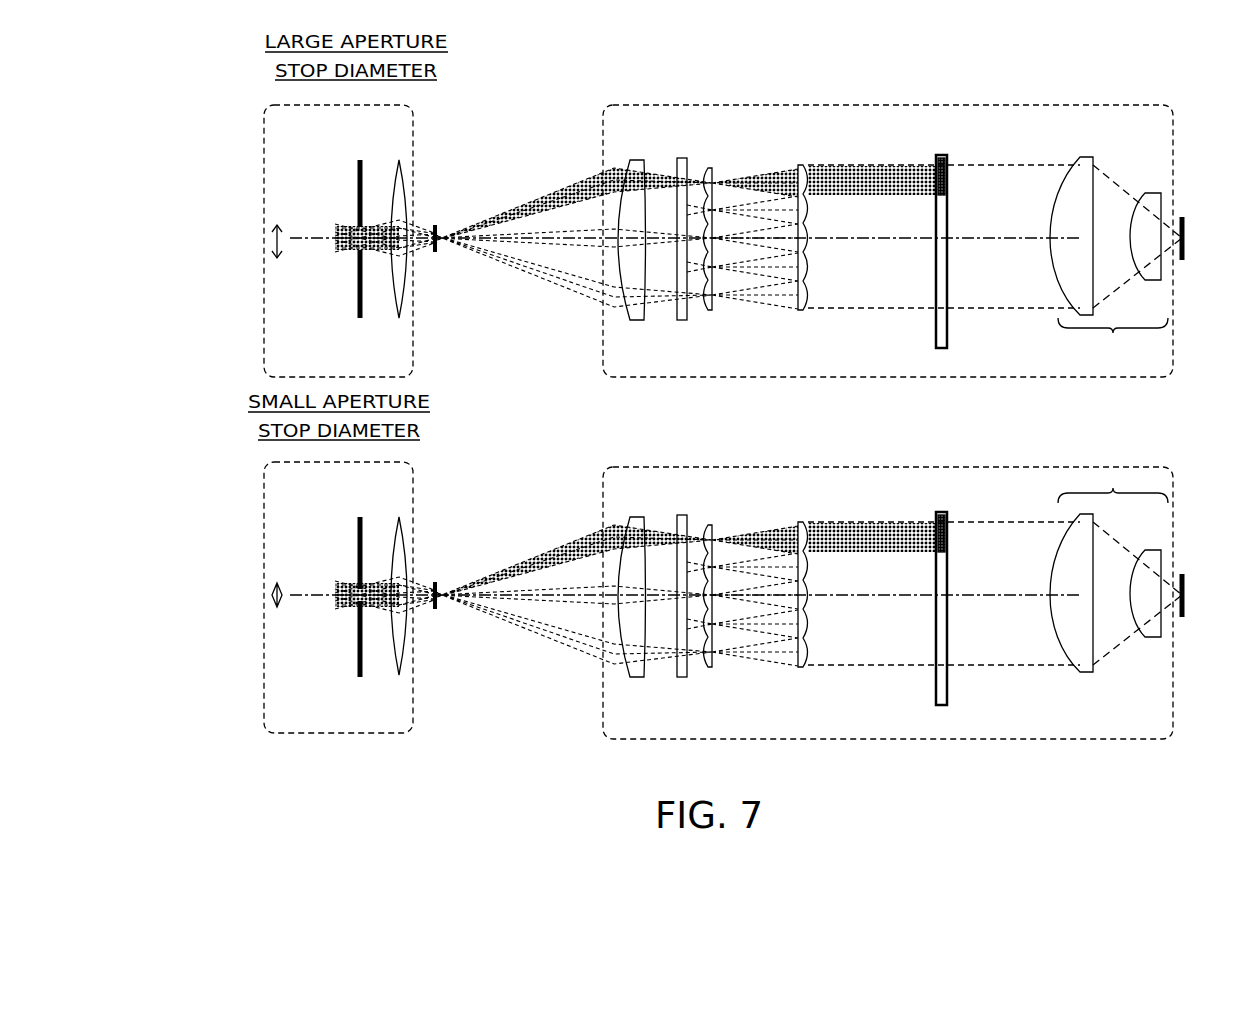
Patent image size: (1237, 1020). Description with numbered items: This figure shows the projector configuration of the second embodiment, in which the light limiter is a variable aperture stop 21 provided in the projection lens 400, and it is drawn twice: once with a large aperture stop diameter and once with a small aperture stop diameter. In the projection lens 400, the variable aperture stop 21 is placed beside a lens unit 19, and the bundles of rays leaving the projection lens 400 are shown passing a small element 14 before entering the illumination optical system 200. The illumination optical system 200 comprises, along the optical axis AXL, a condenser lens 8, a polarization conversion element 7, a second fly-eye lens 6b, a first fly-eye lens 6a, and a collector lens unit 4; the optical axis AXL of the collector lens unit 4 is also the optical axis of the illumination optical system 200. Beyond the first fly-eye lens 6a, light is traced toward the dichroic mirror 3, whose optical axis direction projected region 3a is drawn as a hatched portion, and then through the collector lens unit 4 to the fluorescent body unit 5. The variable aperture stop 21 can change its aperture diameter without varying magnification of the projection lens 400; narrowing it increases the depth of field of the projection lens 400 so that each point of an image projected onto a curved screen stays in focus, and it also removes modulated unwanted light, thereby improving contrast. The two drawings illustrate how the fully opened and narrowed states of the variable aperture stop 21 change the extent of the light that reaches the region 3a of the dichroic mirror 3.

The dichroic mirror 3 is at (943, 336).
The optical axis direction projected region 3a is at (937, 194).
The collector lens unit 4 is at (1082, 329).
The fluorescent body unit 5 is at (1183, 262).
The first fly-eye lens 6a is at (805, 312).
The second fly-eye lens 6b is at (707, 312).
The polarization conversion element 7 is at (684, 321).
The condenser lens 8 is at (633, 321).
The field stop 14 is at (437, 253).
The lens unit 19 is at (404, 302).
The variable aperture stop 21 is at (360, 318).
The illumination optical system 200 is at (1163, 377).
The projection lens 400 is at (264, 362).
The optical axis AXL is at (868, 240).